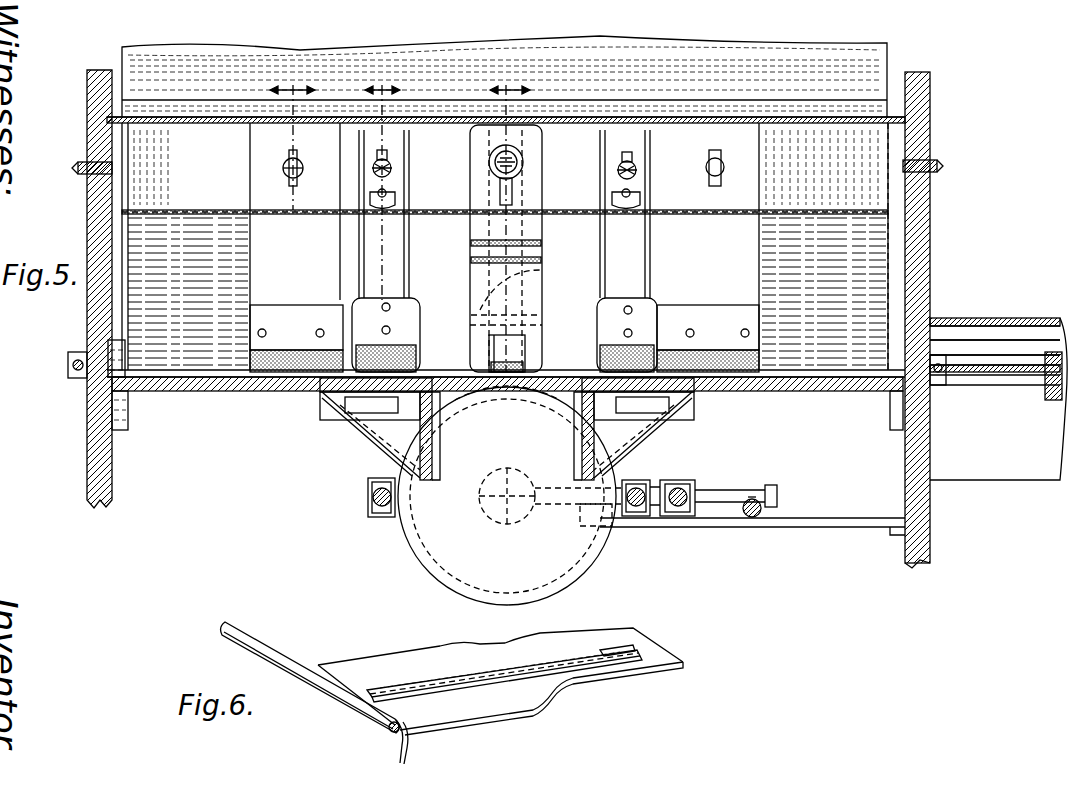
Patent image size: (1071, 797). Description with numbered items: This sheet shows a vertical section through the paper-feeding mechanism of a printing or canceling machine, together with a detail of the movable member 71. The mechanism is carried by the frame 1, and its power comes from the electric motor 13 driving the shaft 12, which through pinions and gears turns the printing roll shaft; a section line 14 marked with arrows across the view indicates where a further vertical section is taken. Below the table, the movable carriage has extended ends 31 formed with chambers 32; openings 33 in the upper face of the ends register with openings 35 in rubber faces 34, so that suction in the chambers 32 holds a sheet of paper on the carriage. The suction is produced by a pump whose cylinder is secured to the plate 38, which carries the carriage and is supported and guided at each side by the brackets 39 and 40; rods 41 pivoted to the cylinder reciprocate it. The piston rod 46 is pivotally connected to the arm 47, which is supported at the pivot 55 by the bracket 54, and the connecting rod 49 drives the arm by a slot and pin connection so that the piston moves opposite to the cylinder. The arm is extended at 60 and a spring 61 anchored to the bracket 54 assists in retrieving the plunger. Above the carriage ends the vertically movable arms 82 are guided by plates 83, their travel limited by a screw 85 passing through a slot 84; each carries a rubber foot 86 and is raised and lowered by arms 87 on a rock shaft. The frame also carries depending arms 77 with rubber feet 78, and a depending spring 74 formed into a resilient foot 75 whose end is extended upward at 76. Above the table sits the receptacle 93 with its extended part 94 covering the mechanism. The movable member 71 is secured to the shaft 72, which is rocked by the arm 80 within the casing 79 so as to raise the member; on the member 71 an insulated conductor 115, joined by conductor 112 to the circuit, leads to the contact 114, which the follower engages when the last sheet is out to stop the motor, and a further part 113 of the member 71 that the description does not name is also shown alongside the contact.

In FIG. 5, the frame 1 is at (112, 492).
In FIG. 5, the shaft 12 is at (832, 212).
In FIG. 5, the electric motor 13 is at (250, 395).
In FIG. 5, the fastener position 14 is at (490, 428).
In FIG. 5, the extended ends 31 is at (322, 392).
In FIG. 5, the chambers 32 is at (360, 400).
In FIG. 5, the openings 33 is at (362, 420).
In FIG. 5, the rubber faces 34 is at (410, 378).
In FIG. 5, the openings 35 is at (315, 343).
In FIG. 5, the plate 38 is at (205, 391).
In FIG. 5, the bracket 39 is at (87, 385).
In FIG. 5, the bracket 40 is at (128, 428).
In FIG. 5, the rods 41 is at (382, 517).
In FIG. 5, the piston rod 46 is at (490, 520).
In FIG. 5, the arm 47 is at (560, 505).
In FIG. 5, the connecting rod 49 is at (680, 482).
In FIG. 5, the bracket 54 is at (862, 517).
In FIG. 5, the pivot 55 is at (556, 482).
In FIG. 5, the extension 60 is at (768, 492).
In FIG. 5, the spring 61 is at (752, 518).
In FIG. 6, the movable member 71 is at (550, 700).
In FIG. 5, the shaft 72 is at (985, 365).
In FIG. 6, the shaft 72 is at (268, 648).
In FIG. 5, the depending spring 74 is at (540, 270).
In FIG. 5, the resilient foot 75 is at (520, 345).
In FIG. 5, the extended end 76 is at (538, 300).
In FIG. 5, the depending arms 77 is at (262, 258).
In FIG. 5, the feet 78 is at (250, 360).
In FIG. 5, the casing 79 is at (968, 318).
In FIG. 5, the arm 80 is at (1045, 392).
In FIG. 5, the vertically movable arms 82 is at (392, 275).
In FIG. 5, the plates 83 is at (400, 150).
In FIG. 5, the slot 84 is at (395, 148).
In FIG. 5, the screw 85 is at (392, 168).
In FIG. 5, the foot 86 is at (412, 322).
In FIG. 5, the arms 87 is at (395, 190).
In FIG. 5, the receptacle 93 is at (665, 58).
In FIG. 5, the extended part 94 is at (846, 135).
In FIG. 6, the conductor 112 is at (408, 752).
In FIG. 6, the slot 113 is at (420, 690).
In FIG. 5, the contact 114 is at (480, 405).
In FIG. 6, the contact 114 is at (622, 648).
In FIG. 6, the conductor 115 is at (520, 660).